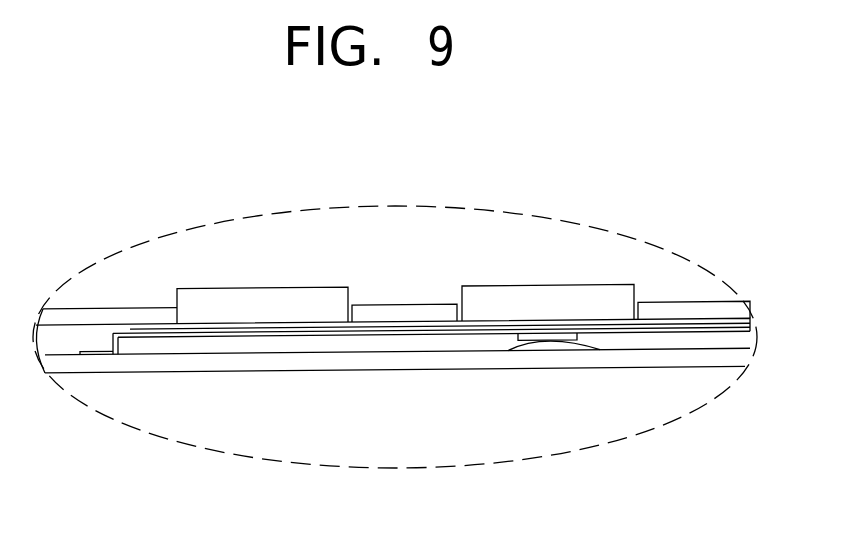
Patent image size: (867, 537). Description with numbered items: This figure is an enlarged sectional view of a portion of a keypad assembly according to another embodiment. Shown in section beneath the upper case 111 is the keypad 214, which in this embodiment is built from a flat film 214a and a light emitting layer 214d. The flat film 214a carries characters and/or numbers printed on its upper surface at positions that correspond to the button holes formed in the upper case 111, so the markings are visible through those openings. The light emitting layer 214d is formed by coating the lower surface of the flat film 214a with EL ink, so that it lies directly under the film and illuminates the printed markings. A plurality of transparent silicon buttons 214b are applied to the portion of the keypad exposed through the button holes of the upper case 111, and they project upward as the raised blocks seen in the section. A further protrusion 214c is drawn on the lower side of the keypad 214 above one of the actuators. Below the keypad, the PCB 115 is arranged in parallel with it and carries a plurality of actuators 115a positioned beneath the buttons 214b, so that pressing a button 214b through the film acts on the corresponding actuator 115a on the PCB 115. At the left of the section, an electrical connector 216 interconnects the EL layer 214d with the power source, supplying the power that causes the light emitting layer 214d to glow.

The upper case 111 is at (88, 318).
The keypad 214 is at (673, 314).
The flat film 214a is at (397, 316).
The transparent silicon buttons 214b is at (560, 306).
The coupling protrusion 214c is at (588, 342).
The light emitting layer 214d is at (447, 337).
The PCB 115 is at (352, 376).
The actuators 115a is at (546, 347).
The electrical connector 216 is at (125, 357).